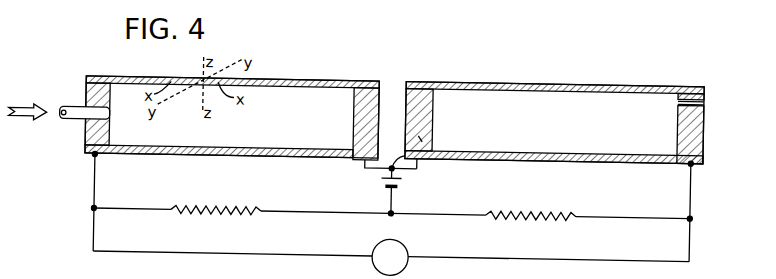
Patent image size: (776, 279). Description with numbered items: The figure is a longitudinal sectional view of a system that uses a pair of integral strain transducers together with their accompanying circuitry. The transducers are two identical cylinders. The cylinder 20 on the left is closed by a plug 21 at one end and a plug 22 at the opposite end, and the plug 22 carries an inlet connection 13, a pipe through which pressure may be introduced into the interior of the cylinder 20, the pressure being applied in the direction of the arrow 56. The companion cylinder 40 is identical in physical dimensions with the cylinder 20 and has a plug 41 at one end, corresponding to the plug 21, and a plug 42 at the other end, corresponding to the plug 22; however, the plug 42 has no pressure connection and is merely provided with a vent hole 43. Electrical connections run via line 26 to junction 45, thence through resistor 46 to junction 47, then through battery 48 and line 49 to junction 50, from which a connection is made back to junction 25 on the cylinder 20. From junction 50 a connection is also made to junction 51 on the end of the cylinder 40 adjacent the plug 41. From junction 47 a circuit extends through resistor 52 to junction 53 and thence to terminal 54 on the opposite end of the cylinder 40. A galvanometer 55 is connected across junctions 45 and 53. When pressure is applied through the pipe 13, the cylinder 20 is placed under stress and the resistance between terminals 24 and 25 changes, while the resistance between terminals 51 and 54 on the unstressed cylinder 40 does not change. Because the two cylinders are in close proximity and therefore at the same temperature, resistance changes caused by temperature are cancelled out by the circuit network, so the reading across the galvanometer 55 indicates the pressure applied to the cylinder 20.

The inlet connection 13 is at (72, 107).
The cylinder 20 is at (254, 75).
The plug 21 is at (353, 109).
The plug 22 is at (85, 131).
The terminal 24 is at (94, 155).
The junction 25 is at (364, 157).
The line 26 is at (95, 188).
The companion cylinder 40 is at (531, 75).
The plug 41 is at (432, 118).
The plug 42 is at (677, 131).
The vent hole 43 is at (700, 92).
The junction 45 is at (95, 208).
The resistor 46 is at (215, 208).
The junction 47 is at (394, 208).
The battery 48 is at (384, 178).
The line 49 is at (397, 165).
The junction 50 is at (420, 133).
The junction 51 is at (420, 157).
The resistor 52 is at (530, 205).
The junction 53 is at (694, 208).
The terminal 54 is at (694, 156).
The galvanometer 55 is at (407, 243).
The arrow 56 is at (27, 105).